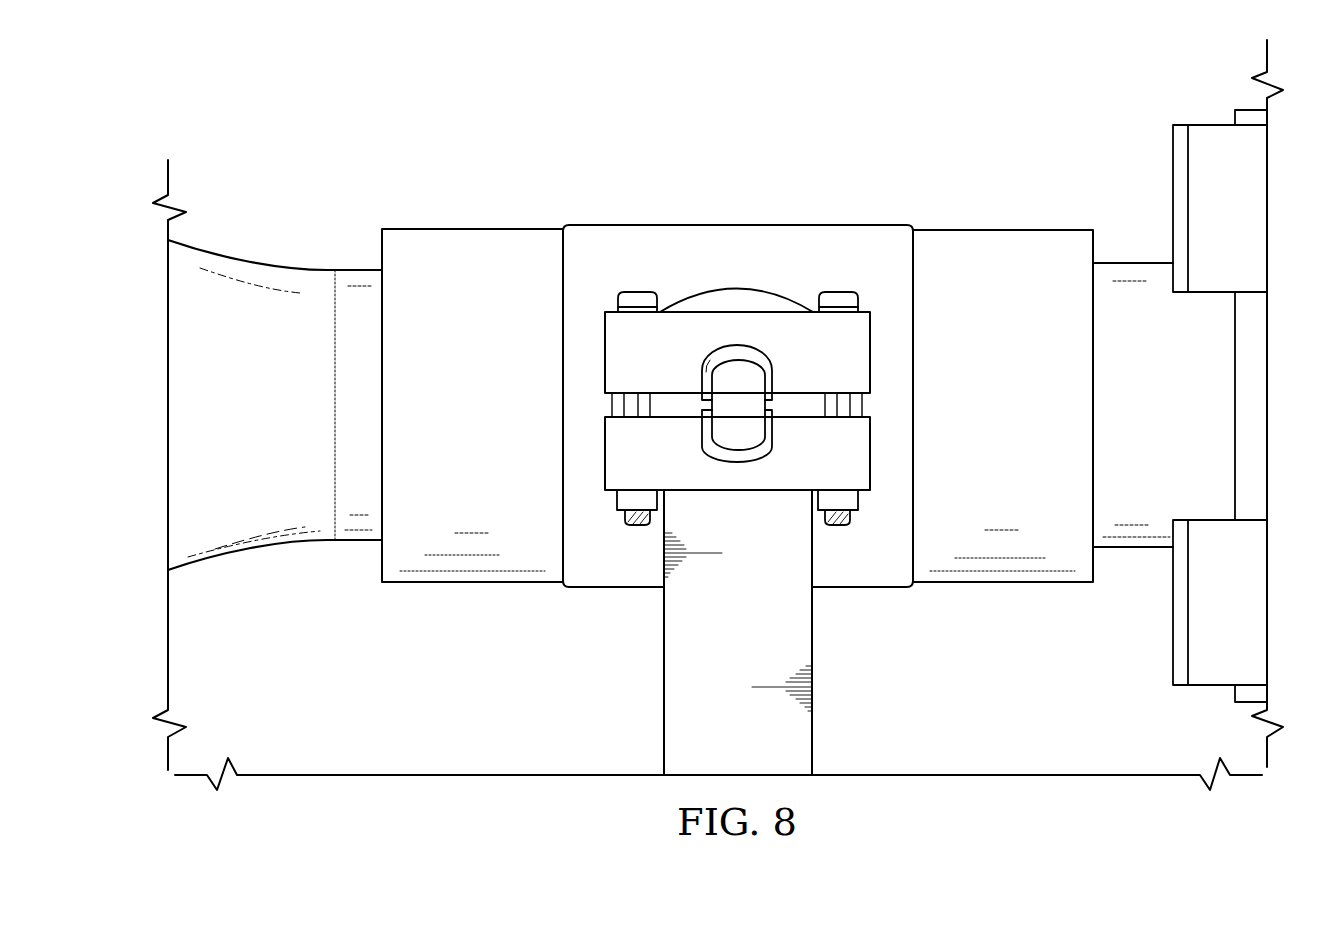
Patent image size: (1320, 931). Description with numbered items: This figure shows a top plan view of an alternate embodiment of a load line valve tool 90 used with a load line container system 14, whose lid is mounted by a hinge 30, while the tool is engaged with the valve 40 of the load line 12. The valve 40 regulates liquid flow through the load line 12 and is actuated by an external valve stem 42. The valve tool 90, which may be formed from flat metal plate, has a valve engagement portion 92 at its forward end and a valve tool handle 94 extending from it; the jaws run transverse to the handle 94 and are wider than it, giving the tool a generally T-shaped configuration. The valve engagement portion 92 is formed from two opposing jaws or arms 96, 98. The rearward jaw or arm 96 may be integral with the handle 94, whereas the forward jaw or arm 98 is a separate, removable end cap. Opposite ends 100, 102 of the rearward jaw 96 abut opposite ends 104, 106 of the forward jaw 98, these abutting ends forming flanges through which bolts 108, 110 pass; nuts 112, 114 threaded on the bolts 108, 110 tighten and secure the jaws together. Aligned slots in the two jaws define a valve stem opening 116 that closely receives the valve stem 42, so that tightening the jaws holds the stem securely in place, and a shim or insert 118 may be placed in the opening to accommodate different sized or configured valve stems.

The load line 12 is at (261, 256).
The load line container system 14 is at (1202, 102).
The hinge 30 is at (1172, 181).
The valve 40 is at (490, 228).
The valve stem 42 is at (750, 385).
The load line valve tool 90 is at (749, 632).
The valve engagement portion 92 is at (736, 454).
The valve tool handle 94 is at (652, 620).
The rearward jaw or arm 96 is at (736, 457).
The forward jaw or arm 98 is at (698, 307).
The first end of rearward jaw 100 is at (628, 468).
The second end of rearward jaw 102 is at (855, 470).
The first end of forward jaw 104 is at (618, 348).
The second end of forward jaw 106 is at (873, 347).
The first bolt 108 is at (637, 292).
The second bolt 110 is at (837, 292).
The first nut 112 is at (617, 498).
The second nut 114 is at (858, 498).
The valve stem opening 116 is at (698, 382).
The shim or insert 118 is at (740, 460).